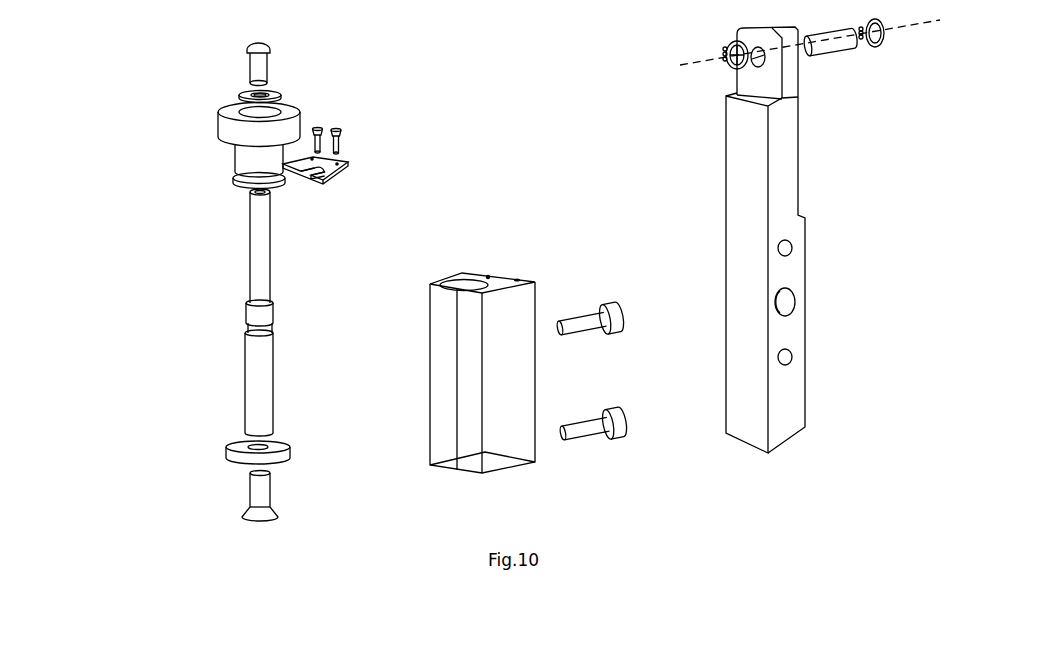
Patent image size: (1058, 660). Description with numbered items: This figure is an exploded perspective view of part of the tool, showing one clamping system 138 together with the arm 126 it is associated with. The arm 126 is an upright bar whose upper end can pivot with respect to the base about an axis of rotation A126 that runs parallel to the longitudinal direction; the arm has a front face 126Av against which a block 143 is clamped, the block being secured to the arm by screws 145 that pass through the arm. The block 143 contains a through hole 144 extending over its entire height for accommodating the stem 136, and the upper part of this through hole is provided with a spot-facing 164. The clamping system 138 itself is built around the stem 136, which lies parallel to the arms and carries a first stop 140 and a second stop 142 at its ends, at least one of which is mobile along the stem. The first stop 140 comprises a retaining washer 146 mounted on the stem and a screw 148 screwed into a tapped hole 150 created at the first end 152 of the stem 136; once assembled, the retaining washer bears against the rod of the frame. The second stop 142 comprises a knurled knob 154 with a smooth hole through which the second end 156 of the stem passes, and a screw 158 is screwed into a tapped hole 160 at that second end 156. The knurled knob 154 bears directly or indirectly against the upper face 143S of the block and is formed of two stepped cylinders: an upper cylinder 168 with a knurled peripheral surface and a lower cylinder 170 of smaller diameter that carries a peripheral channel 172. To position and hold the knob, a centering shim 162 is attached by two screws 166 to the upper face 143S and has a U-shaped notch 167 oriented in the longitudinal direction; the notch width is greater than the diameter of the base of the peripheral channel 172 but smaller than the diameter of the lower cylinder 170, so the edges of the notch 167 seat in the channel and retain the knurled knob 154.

The arm 126 is at (791, 236).
The front face 126Av is at (740, 143).
The axis of rotation A126 is at (791, 42).
The stem 136 is at (243, 420).
The clamping system 138 is at (166, 121).
The first stop 140 is at (299, 485).
The second stop 142 is at (309, 95).
The block 143 is at (489, 275).
The upper face 143S is at (504, 281).
The through hole 144 is at (494, 320).
The screws 145 is at (583, 432).
The retaining washer 146 is at (289, 426).
The screw 148 is at (252, 490).
The tapped hole 150 is at (277, 441).
The first end 152 is at (252, 367).
The knurled knob 154 is at (223, 118).
The second end 156 is at (246, 246).
The screw 158 is at (262, 67).
The tapped hole 160 is at (268, 194).
The centering shim 162 is at (336, 195).
The spot-facing 164 is at (465, 282).
The screws 166 is at (336, 129).
The U-shaped notch 167 is at (305, 172).
The upper cylinder 168 is at (292, 127).
The lower cylinder 170 is at (238, 155).
The peripheral channel 172 is at (245, 175).